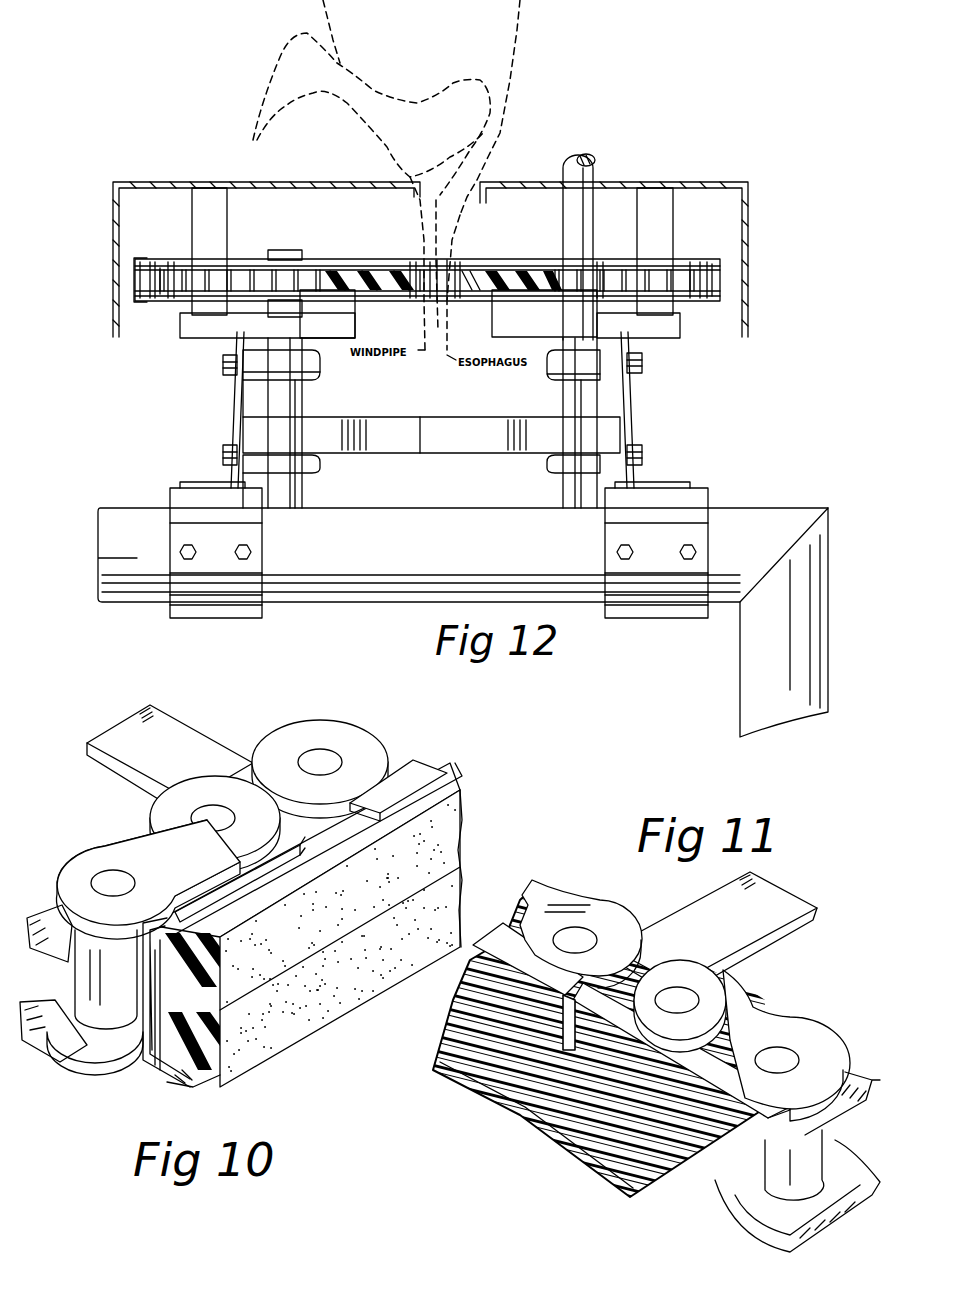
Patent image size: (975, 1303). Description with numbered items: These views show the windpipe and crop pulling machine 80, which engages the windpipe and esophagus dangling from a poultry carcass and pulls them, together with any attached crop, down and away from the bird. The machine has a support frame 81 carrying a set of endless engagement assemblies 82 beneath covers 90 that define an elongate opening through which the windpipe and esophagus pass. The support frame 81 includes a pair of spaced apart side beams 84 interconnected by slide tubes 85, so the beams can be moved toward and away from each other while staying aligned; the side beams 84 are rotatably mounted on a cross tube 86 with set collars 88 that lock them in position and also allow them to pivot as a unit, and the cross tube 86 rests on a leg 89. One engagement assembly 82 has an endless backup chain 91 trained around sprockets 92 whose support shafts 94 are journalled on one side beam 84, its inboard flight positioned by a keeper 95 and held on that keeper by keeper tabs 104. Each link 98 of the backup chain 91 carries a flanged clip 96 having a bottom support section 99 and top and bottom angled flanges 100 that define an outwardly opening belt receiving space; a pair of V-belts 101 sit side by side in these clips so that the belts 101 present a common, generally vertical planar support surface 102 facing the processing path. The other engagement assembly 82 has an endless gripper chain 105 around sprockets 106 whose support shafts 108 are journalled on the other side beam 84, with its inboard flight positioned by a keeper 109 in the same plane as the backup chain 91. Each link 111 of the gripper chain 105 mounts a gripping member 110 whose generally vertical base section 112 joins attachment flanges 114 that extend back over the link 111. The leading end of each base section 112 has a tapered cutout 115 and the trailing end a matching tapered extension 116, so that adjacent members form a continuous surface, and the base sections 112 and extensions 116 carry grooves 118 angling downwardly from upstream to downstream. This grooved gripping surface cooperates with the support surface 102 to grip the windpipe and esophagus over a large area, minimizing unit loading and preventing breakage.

In FIG. 12, the windpipe and crop pulling machine 80 is at (137, 150).
In FIG. 12, the support frame 81 is at (160, 491).
In FIG. 12, the endless engagement assemblies 82 is at (427, 256).
In FIG. 10, the endless engagement assemblies 82 is at (278, 726).
In FIG. 11, the endless engagement assemblies 82 is at (430, 1065).
In FIG. 12, the side beams 84 is at (233, 405).
In FIG. 12, the slide tubes 85 is at (390, 455).
In FIG. 12, the cross tube 86 is at (406, 603).
In FIG. 12, the set collars 88 is at (246, 617).
In FIG. 12, the leg 89 is at (745, 690).
In FIG. 12, the covers 90 is at (235, 181).
In FIG. 12, the backup chain 91 is at (163, 303).
In FIG. 10, the backup chain 91 is at (84, 855).
In FIG. 12, the sprockets 92 is at (190, 285).
In FIG. 12, the support shafts 94 is at (302, 251).
In FIG. 12, the keeper 95 is at (346, 282).
In FIG. 12, the flanged clip 96 is at (151, 268).
In FIG. 10, the flanged clip 96 is at (146, 1067).
In FIG. 10, the links 98 is at (345, 736).
In FIG. 10, the bottom support section 99 is at (148, 987).
In FIG. 10, the angled flanges 100 is at (173, 916).
In FIG. 12, the V-belts 101 is at (135, 286).
In FIG. 10, the V-belts 101 is at (466, 868).
In FIG. 10, the planar support surface 102 is at (335, 925).
In FIG. 10, the keeper tabs 104 is at (170, 724).
In FIG. 12, the gripper chain 105 is at (457, 301).
In FIG. 11, the gripper chain 105 is at (671, 933).
In FIG. 12, the sprockets 106 is at (603, 280).
In FIG. 12, the support shafts 108 is at (594, 170).
In FIG. 12, the keeper 109 is at (490, 282).
In FIG. 12, the gripping member 110 is at (456, 262).
In FIG. 11, the gripping member 110 is at (452, 1020).
In FIG. 11, the link 111 is at (549, 905).
In FIG. 11, the base section 112 is at (560, 1135).
In FIG. 11, the attachment flanges 114 is at (591, 1064).
In FIG. 11, the tapered cutout 115 is at (440, 1043).
In FIG. 11, the tapered extension 116 is at (468, 1083).
In FIG. 11, the grooves 118 is at (612, 1160).